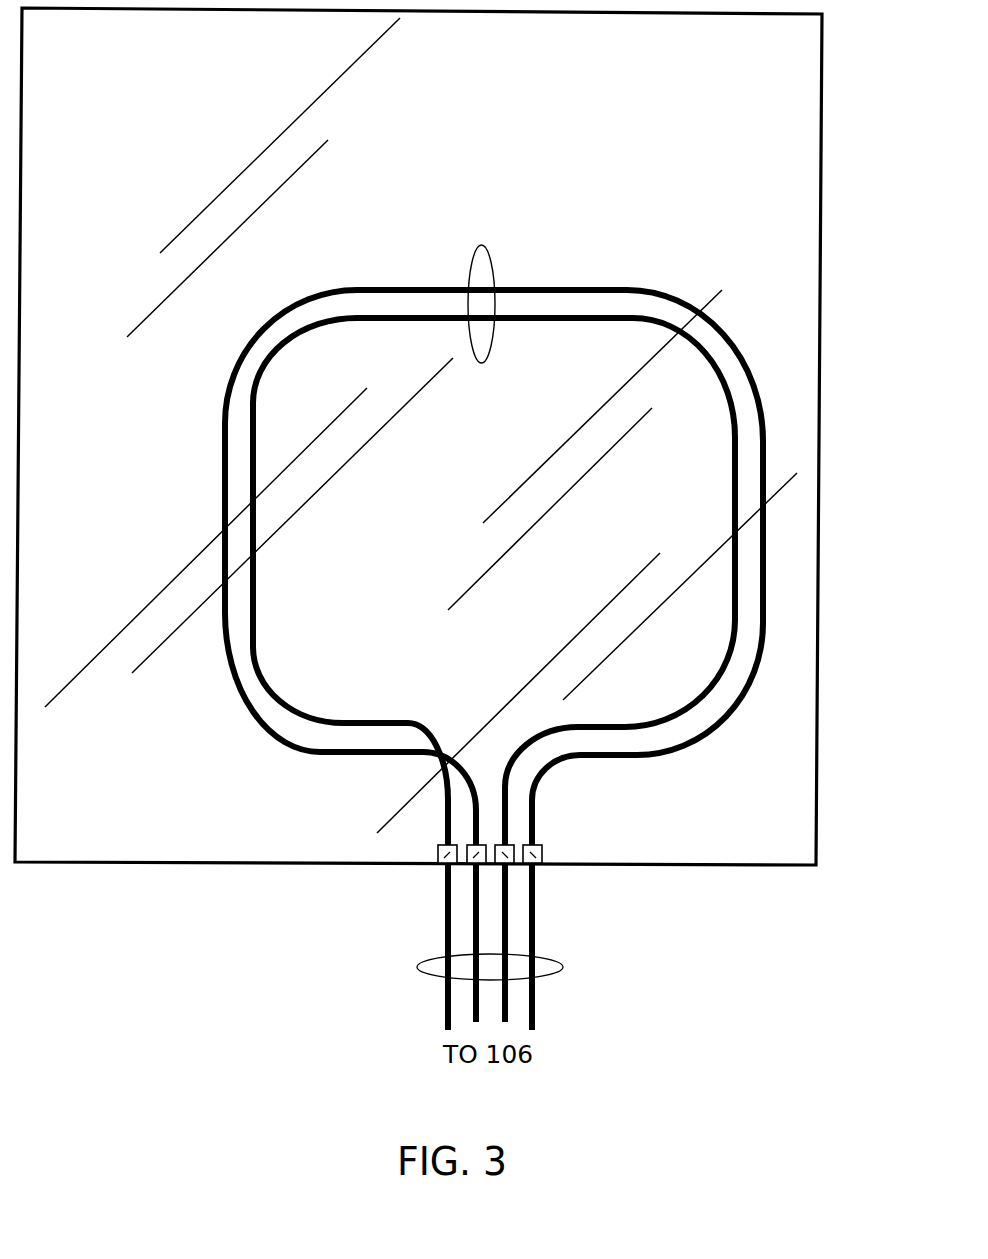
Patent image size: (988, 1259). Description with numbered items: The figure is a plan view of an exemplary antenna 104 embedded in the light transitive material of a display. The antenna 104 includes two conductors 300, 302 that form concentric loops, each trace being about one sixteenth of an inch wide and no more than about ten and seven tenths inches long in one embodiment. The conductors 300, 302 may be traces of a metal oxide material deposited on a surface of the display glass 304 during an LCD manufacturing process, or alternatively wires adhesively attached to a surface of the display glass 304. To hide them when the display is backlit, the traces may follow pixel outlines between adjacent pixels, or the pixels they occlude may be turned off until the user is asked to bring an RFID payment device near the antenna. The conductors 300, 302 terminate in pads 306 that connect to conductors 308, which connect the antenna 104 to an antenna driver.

The antenna 104 is at (482, 253).
The conductor 300 is at (589, 288).
The conductor 302 is at (568, 322).
The display glass 304 is at (800, 270).
The pads 306 is at (475, 855).
The conductors 308 is at (563, 967).